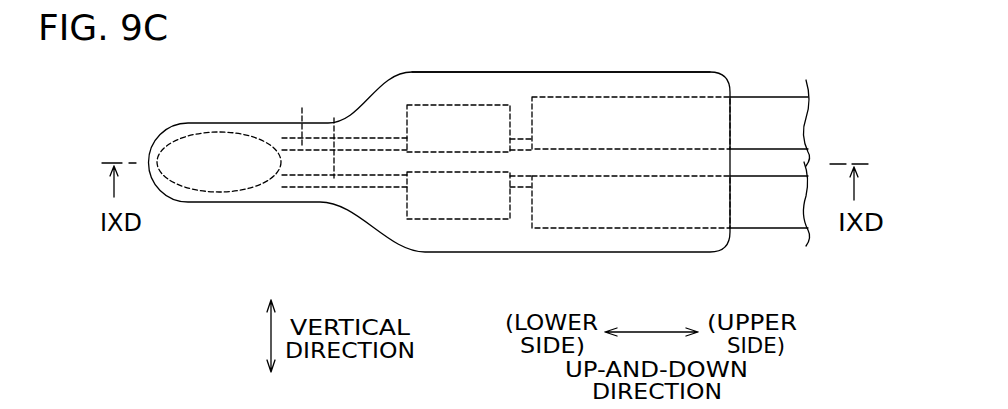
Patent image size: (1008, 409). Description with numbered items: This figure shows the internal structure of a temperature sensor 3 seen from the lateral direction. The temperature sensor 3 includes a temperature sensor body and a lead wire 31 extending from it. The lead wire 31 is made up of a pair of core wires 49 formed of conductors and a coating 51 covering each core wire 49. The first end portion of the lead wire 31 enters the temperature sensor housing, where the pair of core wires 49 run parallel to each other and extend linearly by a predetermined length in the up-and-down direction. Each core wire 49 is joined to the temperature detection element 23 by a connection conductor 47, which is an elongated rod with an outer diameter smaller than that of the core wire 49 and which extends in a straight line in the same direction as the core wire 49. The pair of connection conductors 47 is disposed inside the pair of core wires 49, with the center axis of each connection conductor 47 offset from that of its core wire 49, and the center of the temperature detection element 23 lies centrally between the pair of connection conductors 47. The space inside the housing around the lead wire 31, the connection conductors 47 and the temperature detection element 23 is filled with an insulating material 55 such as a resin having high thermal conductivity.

The temperature sensor 3 is at (634, 65).
The temperature detection element 23 is at (225, 143).
The lead wire 31 is at (770, 108).
The connection conductor 47 is at (333, 120).
The core wire 49 is at (521, 118).
The coating 51 is at (775, 220).
The insulating material 55 is at (456, 85).